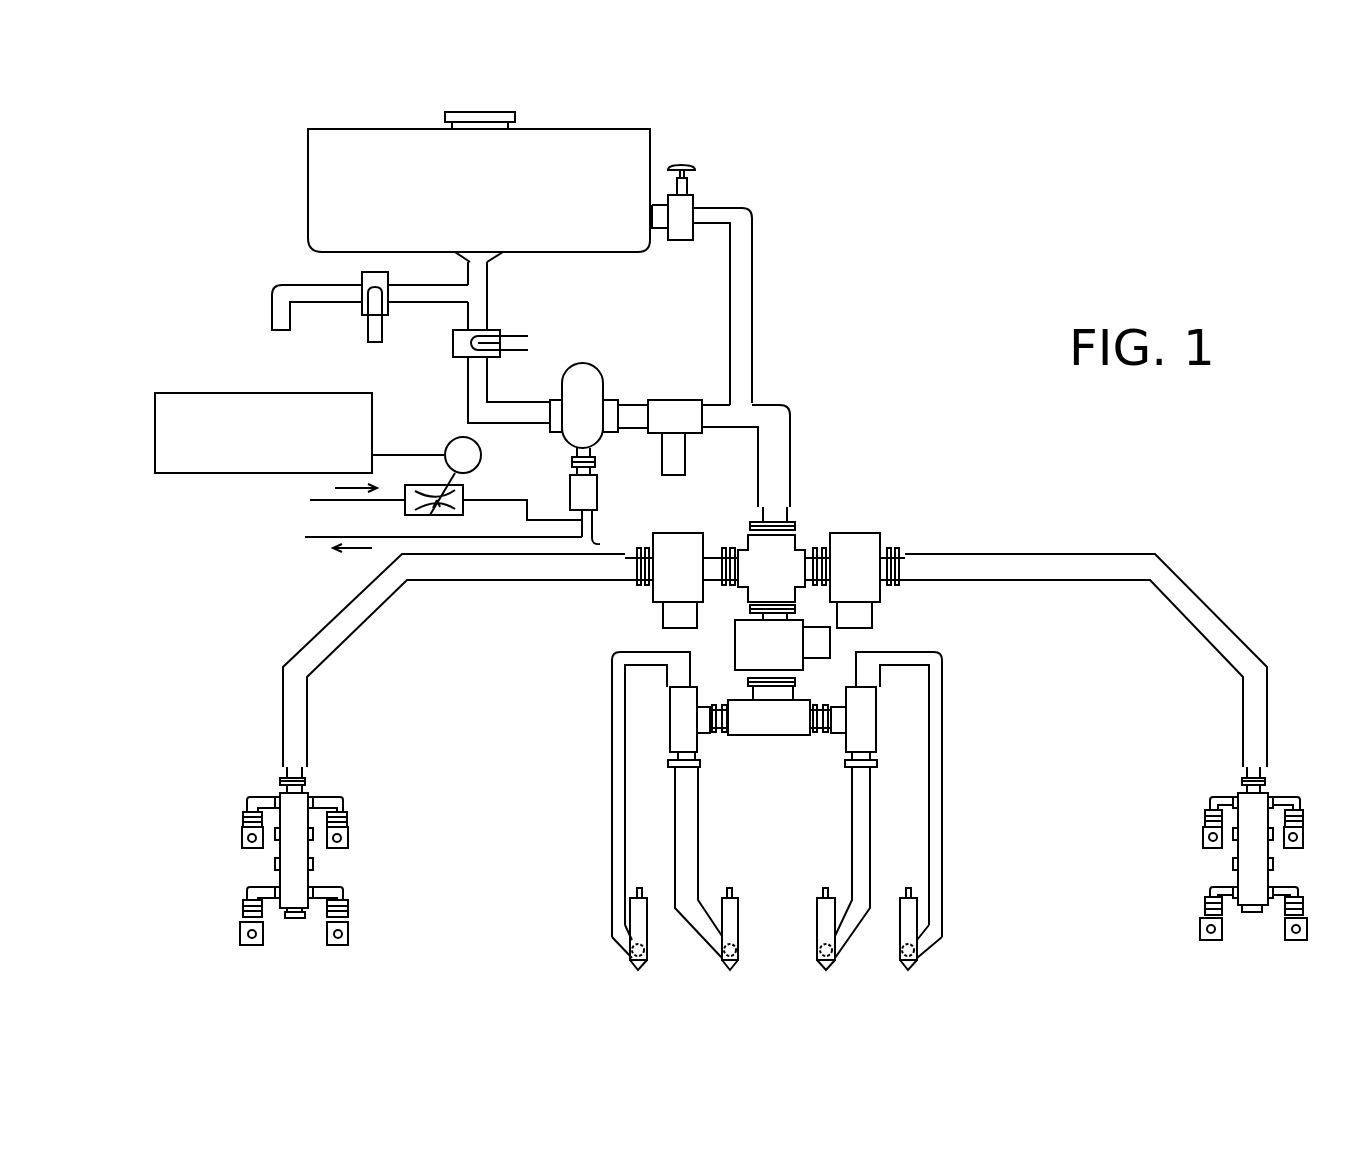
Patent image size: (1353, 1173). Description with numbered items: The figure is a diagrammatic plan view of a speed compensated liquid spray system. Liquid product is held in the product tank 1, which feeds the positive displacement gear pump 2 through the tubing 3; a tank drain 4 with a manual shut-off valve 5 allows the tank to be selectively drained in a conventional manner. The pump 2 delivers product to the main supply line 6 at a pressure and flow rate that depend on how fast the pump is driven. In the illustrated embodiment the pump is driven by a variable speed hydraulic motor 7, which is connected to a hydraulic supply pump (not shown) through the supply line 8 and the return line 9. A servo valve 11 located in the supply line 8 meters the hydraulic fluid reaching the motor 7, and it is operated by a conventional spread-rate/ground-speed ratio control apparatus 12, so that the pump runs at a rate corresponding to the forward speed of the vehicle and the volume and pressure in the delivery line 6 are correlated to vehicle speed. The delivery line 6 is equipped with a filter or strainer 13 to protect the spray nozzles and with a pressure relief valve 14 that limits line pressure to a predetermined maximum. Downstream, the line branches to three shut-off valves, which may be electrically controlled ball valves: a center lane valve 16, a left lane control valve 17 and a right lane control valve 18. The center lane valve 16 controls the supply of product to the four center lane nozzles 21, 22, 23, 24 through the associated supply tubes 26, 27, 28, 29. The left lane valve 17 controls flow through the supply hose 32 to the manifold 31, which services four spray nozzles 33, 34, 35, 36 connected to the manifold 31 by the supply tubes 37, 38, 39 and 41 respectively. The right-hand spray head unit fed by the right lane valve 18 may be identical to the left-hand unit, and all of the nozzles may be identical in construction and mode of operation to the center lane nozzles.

The product tank 1 is at (652, 143).
The positive displacement gear pump 2 is at (584, 370).
The tubing 3 is at (468, 390).
The tank drain 4 is at (278, 292).
The manual shut-off valve 5 is at (362, 308).
The main supply line 6 is at (632, 410).
The variable speed hydraulic motor 7 is at (597, 497).
The supply line 8 is at (497, 500).
The return line 9 is at (600, 544).
The servo valve 11 is at (405, 510).
The spread-rate/ground-speed ratio control apparatus 12 is at (220, 393).
The filter or strainer 13 is at (675, 476).
The pressure relief valve 14 is at (695, 205).
The center lane valve 16 is at (740, 644).
The left lane control valve 17 is at (660, 596).
The right lane control valve 18 is at (857, 540).
The center lane nozzle 21 is at (647, 945).
The center lane nozzle 22 is at (738, 930).
The center lane nozzle 23 is at (817, 915).
The center lane nozzle 24 is at (900, 945).
The supply tube 26 is at (610, 838).
The supply tube 27 is at (698, 843).
The supply tube 28 is at (852, 840).
The supply tube 29 is at (943, 845).
The manifold 31 is at (300, 878).
The supply hose 32 is at (330, 622).
The spray nozzle 33 is at (242, 837).
The spray nozzle 34 is at (250, 945).
The spray nozzle 35 is at (338, 945).
The spray nozzle 36 is at (348, 838).
The supply tube 37 is at (248, 797).
The supply tube 38 is at (247, 893).
The supply tube 39 is at (343, 893).
The supply tube 41 is at (343, 800).